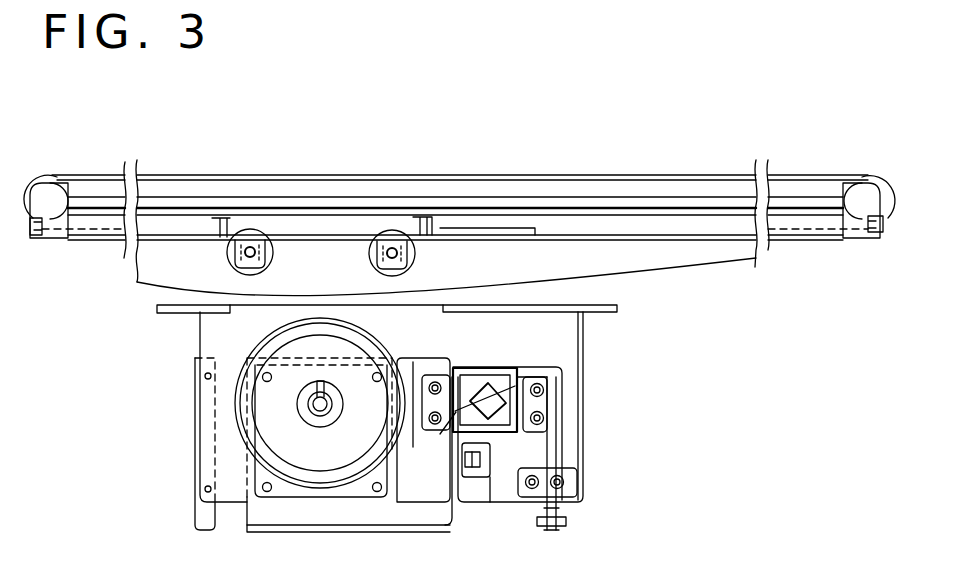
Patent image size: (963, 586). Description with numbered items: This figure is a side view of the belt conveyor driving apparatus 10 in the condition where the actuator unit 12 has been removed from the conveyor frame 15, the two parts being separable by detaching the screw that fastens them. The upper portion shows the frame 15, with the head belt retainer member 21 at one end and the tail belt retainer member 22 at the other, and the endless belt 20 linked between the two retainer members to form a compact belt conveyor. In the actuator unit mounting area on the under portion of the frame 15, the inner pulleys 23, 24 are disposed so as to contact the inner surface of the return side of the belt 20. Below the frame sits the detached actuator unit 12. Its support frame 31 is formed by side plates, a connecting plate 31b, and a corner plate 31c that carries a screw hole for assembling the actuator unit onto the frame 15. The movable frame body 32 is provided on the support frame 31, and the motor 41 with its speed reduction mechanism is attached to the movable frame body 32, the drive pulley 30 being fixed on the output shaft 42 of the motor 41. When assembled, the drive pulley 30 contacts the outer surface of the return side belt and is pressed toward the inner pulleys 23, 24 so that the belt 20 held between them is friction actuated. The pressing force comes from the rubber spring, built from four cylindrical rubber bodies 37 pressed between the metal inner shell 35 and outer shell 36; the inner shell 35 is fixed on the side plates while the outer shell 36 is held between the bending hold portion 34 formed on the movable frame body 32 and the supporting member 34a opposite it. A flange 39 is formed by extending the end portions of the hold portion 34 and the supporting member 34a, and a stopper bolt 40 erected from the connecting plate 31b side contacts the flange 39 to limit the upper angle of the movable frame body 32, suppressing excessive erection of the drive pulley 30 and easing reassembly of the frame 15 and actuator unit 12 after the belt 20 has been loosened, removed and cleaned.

The ink jet recording apparatus carriage rail assembly 10 is at (800, 160).
The actuator unit 12 is at (605, 398).
The frame 15 is at (642, 185).
The endless belt 20 is at (718, 176).
The head belt retainer member 21 is at (864, 176).
The tail belt retainer member 22 is at (38, 177).
The inner pulley 23 is at (416, 255).
The inner pulley 24 is at (273, 255).
The drive pulley 30 is at (268, 352).
The support frame 31 is at (463, 503).
The connecting plate 31b is at (585, 442).
The plate 31c is at (157, 308).
The movable frame body 32 is at (415, 530).
The bending hold portion 34 is at (475, 366).
The supporting member 34a is at (485, 470).
The inner shell 35 is at (438, 433).
The outer shell 36 is at (491, 383).
The cylindrical rubber body 37 is at (455, 372).
The flange 39 is at (575, 368).
The stopper bolt 40 is at (552, 530).
The motor 41 is at (287, 490).
The output shaft 42 is at (322, 414).